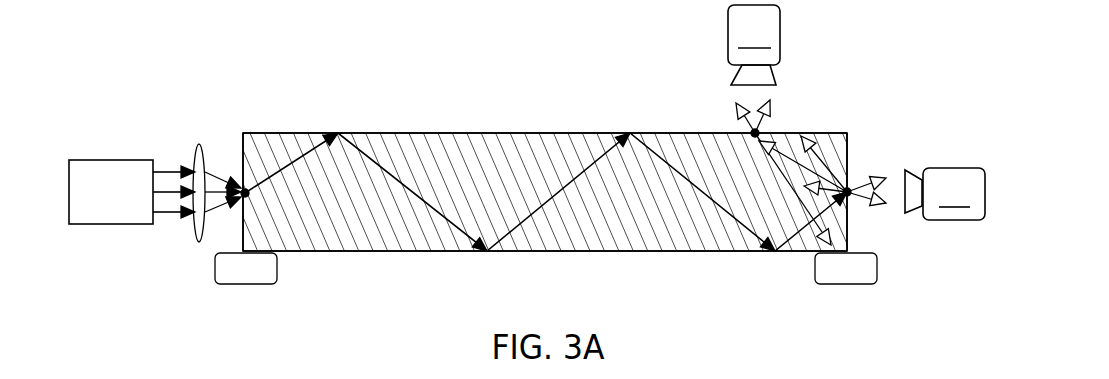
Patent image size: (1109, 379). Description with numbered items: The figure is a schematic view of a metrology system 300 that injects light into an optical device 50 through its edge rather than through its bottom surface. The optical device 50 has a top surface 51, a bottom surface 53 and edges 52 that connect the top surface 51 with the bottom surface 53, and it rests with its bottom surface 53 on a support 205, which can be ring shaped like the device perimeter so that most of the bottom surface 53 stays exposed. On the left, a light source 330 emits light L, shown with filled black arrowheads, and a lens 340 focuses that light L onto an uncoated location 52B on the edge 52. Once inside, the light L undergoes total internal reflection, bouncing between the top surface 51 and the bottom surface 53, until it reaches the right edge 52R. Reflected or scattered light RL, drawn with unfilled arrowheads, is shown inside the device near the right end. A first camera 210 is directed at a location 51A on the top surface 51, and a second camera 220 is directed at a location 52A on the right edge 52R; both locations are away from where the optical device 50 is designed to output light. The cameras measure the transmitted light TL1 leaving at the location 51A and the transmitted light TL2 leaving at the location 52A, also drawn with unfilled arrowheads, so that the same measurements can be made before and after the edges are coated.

The metrology system 300 is at (872, 42).
The light source 330 is at (107, 160).
The lens 340 is at (202, 250).
The optical device 50 is at (333, 108).
The top surface 51 is at (440, 133).
The location on top surface 51A is at (758, 133).
The edge 52 is at (243, 143).
The location on edge 52B is at (250, 195).
The right edge 52R is at (848, 150).
The location on right edge 52A is at (850, 196).
The bottom surface 53 is at (612, 251).
The support 205 is at (242, 287).
The first camera 210 is at (754, 45).
The second camera 220 is at (945, 194).
The light L is at (230, 178).
The reflected/scattered light RL is at (768, 198).
The transmitted light TL1 is at (753, 132).
The transmitted light TL2 is at (850, 190).